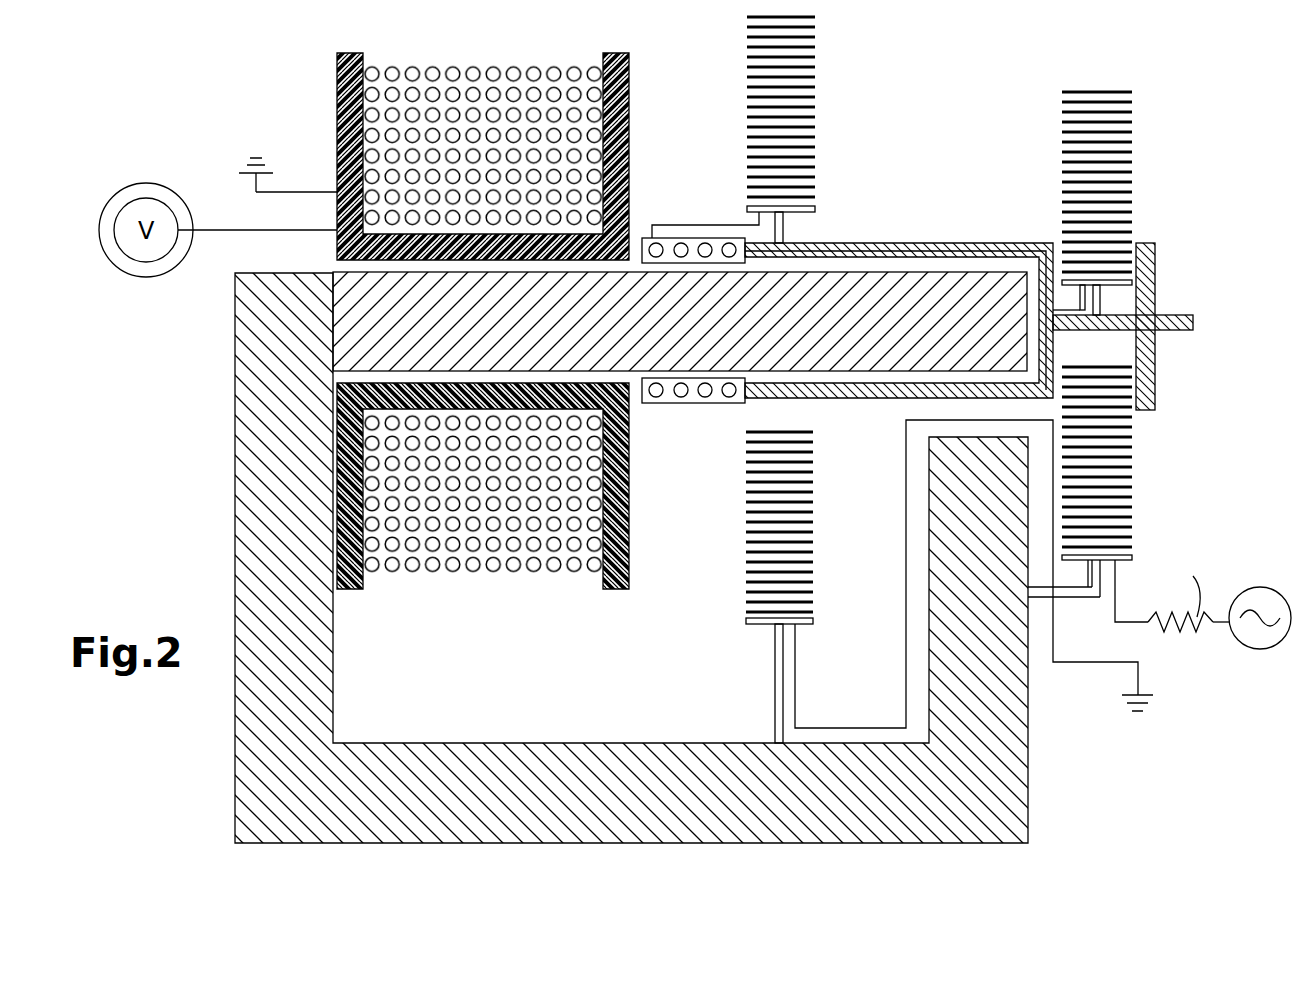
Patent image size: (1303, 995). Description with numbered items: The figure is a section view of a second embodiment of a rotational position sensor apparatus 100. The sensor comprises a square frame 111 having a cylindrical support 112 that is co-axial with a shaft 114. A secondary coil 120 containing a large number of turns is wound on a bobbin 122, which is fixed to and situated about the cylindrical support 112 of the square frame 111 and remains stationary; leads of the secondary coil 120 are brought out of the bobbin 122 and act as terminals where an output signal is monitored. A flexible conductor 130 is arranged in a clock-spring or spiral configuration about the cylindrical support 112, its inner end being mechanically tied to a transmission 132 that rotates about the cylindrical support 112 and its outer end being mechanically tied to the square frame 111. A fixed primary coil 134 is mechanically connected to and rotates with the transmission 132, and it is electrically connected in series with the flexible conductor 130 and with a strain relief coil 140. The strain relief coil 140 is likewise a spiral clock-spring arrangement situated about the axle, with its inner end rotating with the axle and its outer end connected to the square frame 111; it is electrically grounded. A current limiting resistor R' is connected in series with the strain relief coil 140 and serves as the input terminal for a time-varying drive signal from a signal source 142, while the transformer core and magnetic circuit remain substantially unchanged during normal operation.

The plasma processing apparatus 100 is at (863, 65).
The square frame 111 is at (755, 822).
The cylindrical support 112 is at (878, 307).
The shaft 114 is at (1175, 318).
The secondary coil 120 is at (443, 65).
The bobbin 122 is at (630, 63).
The flexible conductor 130 is at (813, 500).
The transmission 132 is at (945, 243).
The fixed primary coil 134 is at (688, 395).
The strain relief coil 140 is at (1125, 465).
The signal source 142 is at (1243, 588).